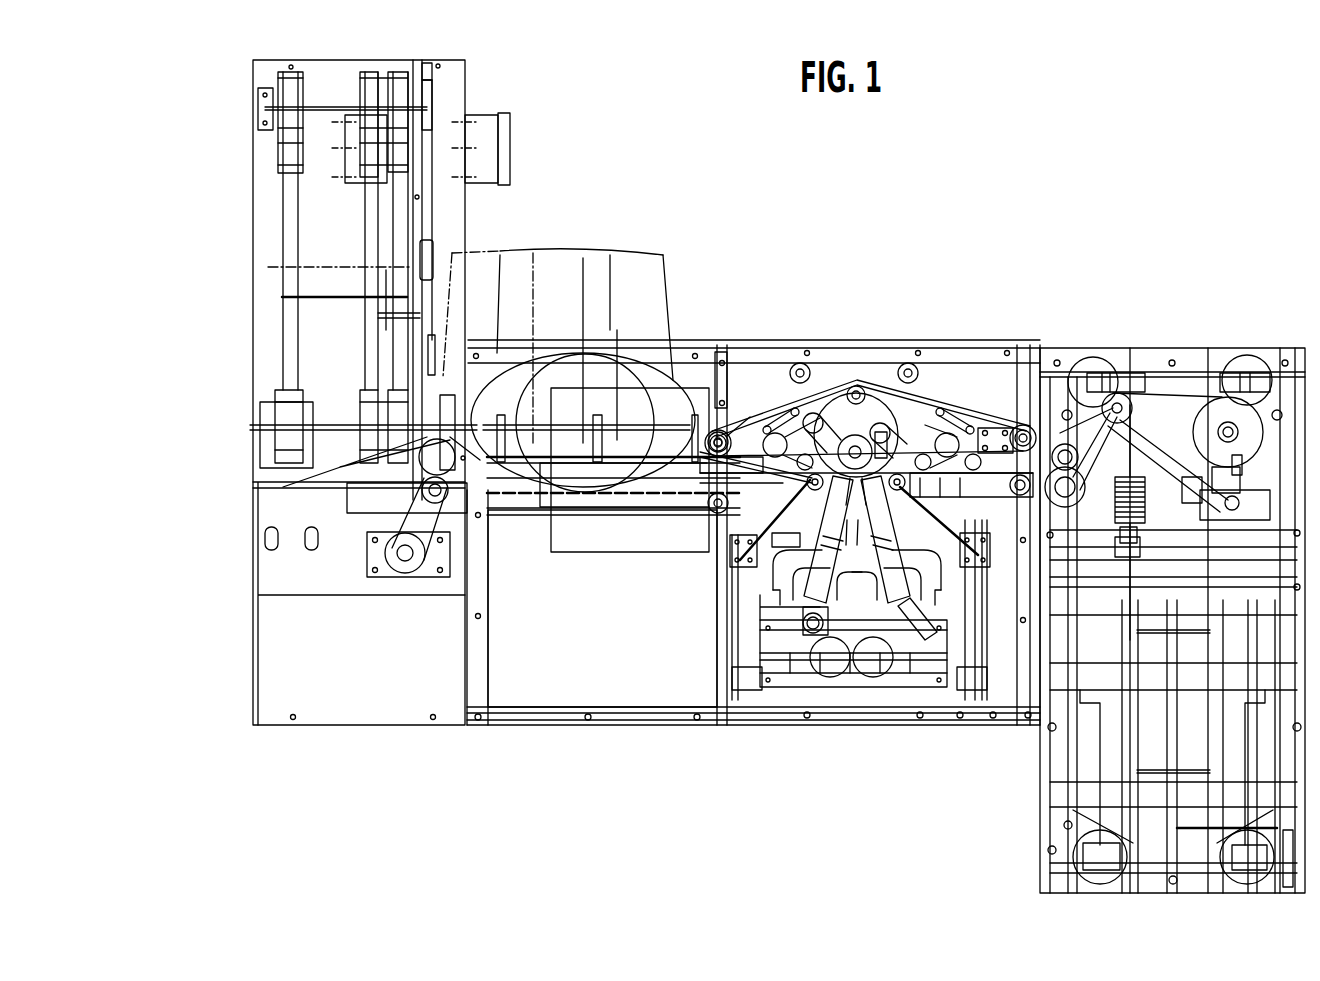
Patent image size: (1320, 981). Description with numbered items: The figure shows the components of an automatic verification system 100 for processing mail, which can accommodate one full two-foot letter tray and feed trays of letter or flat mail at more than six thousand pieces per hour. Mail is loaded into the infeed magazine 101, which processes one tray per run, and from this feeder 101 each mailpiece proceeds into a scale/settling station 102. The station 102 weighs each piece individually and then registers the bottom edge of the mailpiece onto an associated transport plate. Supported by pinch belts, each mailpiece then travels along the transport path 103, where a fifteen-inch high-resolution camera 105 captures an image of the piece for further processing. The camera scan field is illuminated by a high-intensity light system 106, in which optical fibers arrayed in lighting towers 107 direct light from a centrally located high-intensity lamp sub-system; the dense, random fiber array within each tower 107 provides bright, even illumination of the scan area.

The automatic verification system 100 is at (1058, 190).
The infeed magazine 101 is at (330, 347).
The scale/settling station 102 is at (644, 251).
The transport path 103 is at (667, 465).
The camera 105 is at (750, 612).
The high-intensity light system 106 is at (944, 542).
The lighting towers 107 is at (857, 539).